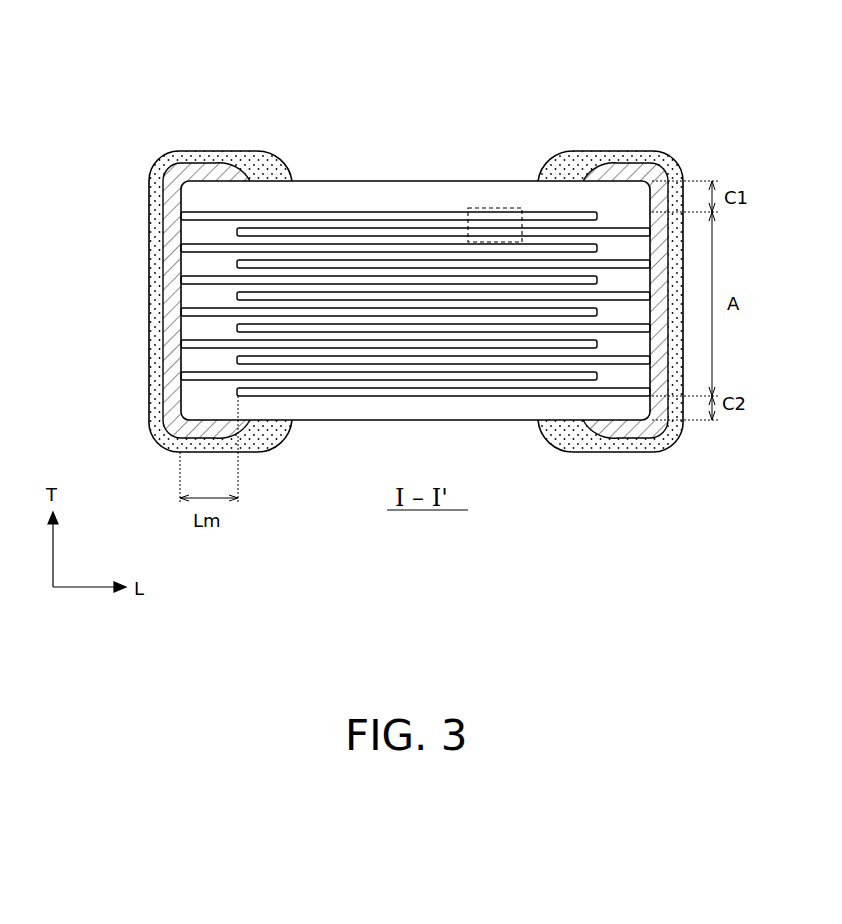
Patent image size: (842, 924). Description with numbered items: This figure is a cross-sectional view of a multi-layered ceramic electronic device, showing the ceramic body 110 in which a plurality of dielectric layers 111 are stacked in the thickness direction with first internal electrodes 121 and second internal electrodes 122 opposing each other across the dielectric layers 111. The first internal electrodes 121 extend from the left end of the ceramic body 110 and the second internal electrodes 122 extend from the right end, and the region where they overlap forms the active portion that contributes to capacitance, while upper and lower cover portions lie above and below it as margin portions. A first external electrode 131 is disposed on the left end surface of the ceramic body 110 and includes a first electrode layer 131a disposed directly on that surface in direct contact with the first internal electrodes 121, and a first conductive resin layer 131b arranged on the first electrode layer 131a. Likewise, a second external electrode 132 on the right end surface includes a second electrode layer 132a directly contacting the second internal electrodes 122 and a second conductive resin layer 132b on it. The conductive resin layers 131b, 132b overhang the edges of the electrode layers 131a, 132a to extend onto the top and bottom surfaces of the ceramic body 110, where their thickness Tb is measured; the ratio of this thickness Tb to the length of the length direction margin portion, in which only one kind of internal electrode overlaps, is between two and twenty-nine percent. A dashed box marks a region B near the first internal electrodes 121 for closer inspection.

The ceramic body 110 is at (389, 181).
The dielectric layer 111 is at (188, 231).
The first internal electrode 121 is at (303, 213).
The second internal electrode 122 is at (245, 239).
The first external electrode 131 is at (210, 240).
The first electrode layer 131a is at (210, 172).
The first conductive resin layer 131b is at (173, 151).
The second external electrode 132 is at (623, 250).
The second electrode layer 132a is at (625, 262).
The second conductive resin layer 132b is at (643, 152).
The thickness of the conductive resin layers Tb is at (276, 172).
The enlarged region B is at (490, 208).